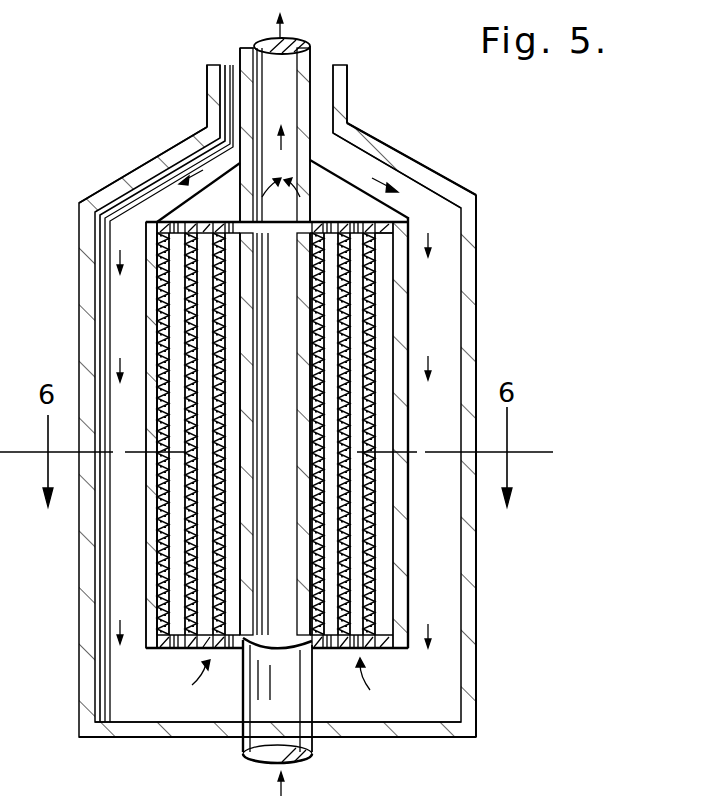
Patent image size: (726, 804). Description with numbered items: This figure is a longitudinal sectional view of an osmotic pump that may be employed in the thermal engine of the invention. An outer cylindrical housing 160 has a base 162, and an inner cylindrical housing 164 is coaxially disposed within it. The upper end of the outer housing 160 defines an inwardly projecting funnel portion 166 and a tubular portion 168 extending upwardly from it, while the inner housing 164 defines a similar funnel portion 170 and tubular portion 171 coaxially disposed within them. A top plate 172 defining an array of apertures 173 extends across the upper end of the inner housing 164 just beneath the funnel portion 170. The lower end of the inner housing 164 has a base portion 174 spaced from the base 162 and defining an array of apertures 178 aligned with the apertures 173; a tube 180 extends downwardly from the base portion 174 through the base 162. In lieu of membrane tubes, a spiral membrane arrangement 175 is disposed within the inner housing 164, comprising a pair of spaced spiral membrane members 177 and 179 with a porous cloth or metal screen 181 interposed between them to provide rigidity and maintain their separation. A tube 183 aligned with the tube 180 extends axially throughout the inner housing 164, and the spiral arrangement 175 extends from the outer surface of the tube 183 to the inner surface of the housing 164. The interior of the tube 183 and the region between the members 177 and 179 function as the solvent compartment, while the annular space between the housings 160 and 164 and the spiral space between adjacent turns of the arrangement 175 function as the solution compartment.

The outer cylindrical housing 160 is at (474, 573).
The base 162 is at (392, 738).
The inner cylindrical housing 164 is at (410, 503).
The funnel portion 166 is at (423, 168).
The tubular portion 168 is at (347, 93).
The funnel portion 170 is at (163, 207).
The tubular portion 171 is at (238, 93).
The top plate 172 is at (276, 237).
The apertures 173 is at (386, 232).
The base portion 174 is at (157, 648).
The spiral membrane arrangement 175 is at (380, 322).
The spiral membrane member 177 is at (372, 384).
The apertures 178 is at (392, 645).
The spiral membrane member 179 is at (358, 418).
The tube 180 is at (313, 679).
The porous cloth or metal screen 181 is at (374, 474).
The tube 183 is at (240, 238).